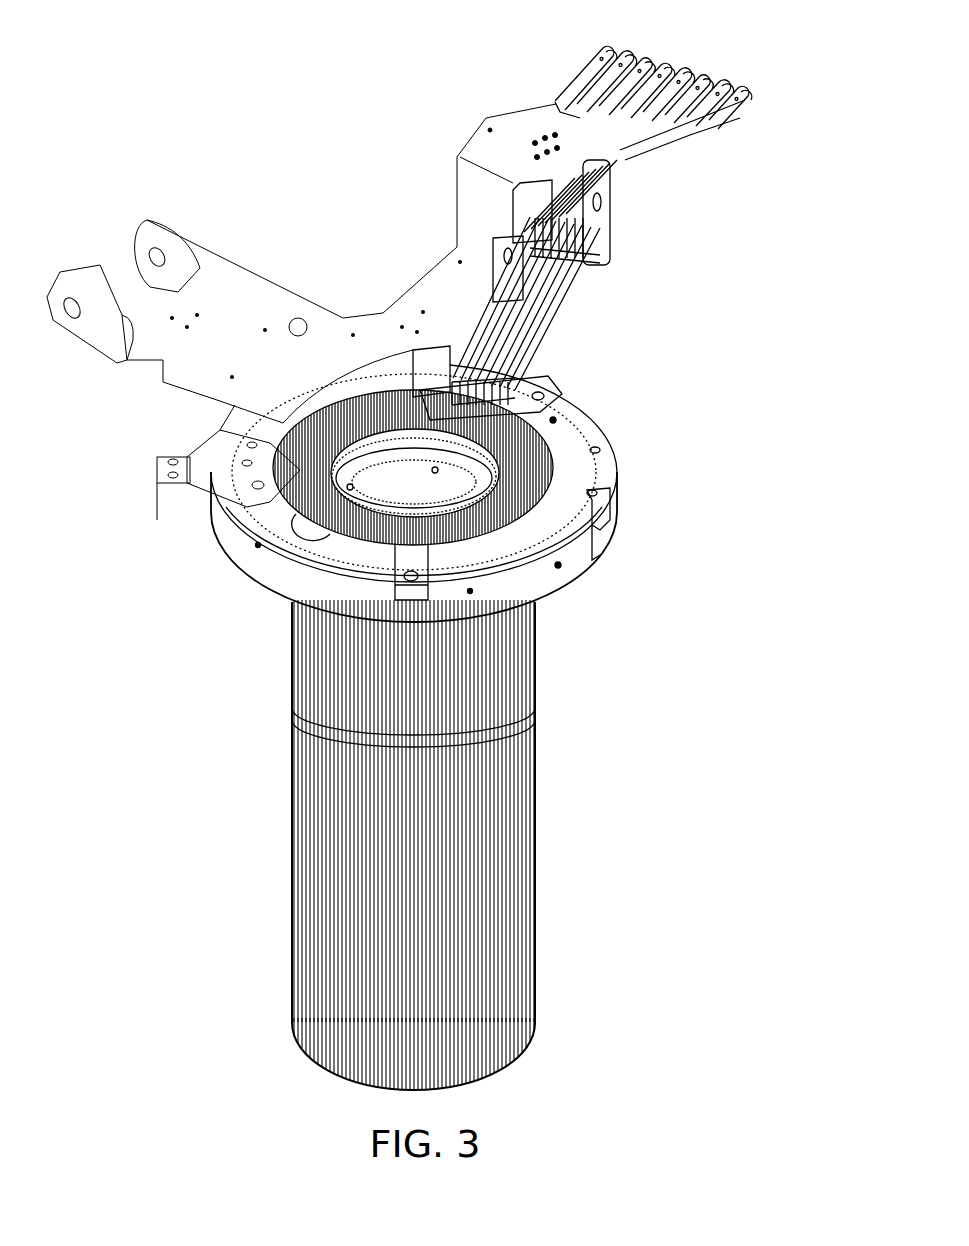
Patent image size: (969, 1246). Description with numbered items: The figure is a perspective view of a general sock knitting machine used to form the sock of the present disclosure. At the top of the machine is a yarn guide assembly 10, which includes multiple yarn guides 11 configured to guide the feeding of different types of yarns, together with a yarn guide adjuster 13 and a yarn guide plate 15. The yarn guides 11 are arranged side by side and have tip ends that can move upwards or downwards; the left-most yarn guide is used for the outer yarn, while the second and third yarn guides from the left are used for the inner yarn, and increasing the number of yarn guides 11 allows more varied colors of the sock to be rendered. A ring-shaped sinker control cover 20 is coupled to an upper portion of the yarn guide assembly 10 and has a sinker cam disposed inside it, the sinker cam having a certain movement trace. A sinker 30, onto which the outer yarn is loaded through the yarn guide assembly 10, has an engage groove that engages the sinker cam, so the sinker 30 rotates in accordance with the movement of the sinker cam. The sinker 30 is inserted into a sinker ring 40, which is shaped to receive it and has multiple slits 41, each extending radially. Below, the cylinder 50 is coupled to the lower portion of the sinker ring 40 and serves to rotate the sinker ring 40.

The yarn guide assembly 10 is at (718, 248).
The yarn guides 11 is at (628, 36).
The yarn guide adjuster 13 is at (603, 230).
The yarn guide plate 15 is at (543, 377).
The sinker control cover 20 is at (606, 410).
The sinker 30 is at (552, 438).
The sinker ring 40 is at (411, 486).
The slits 41 is at (555, 462).
The cylinder 50 is at (540, 838).